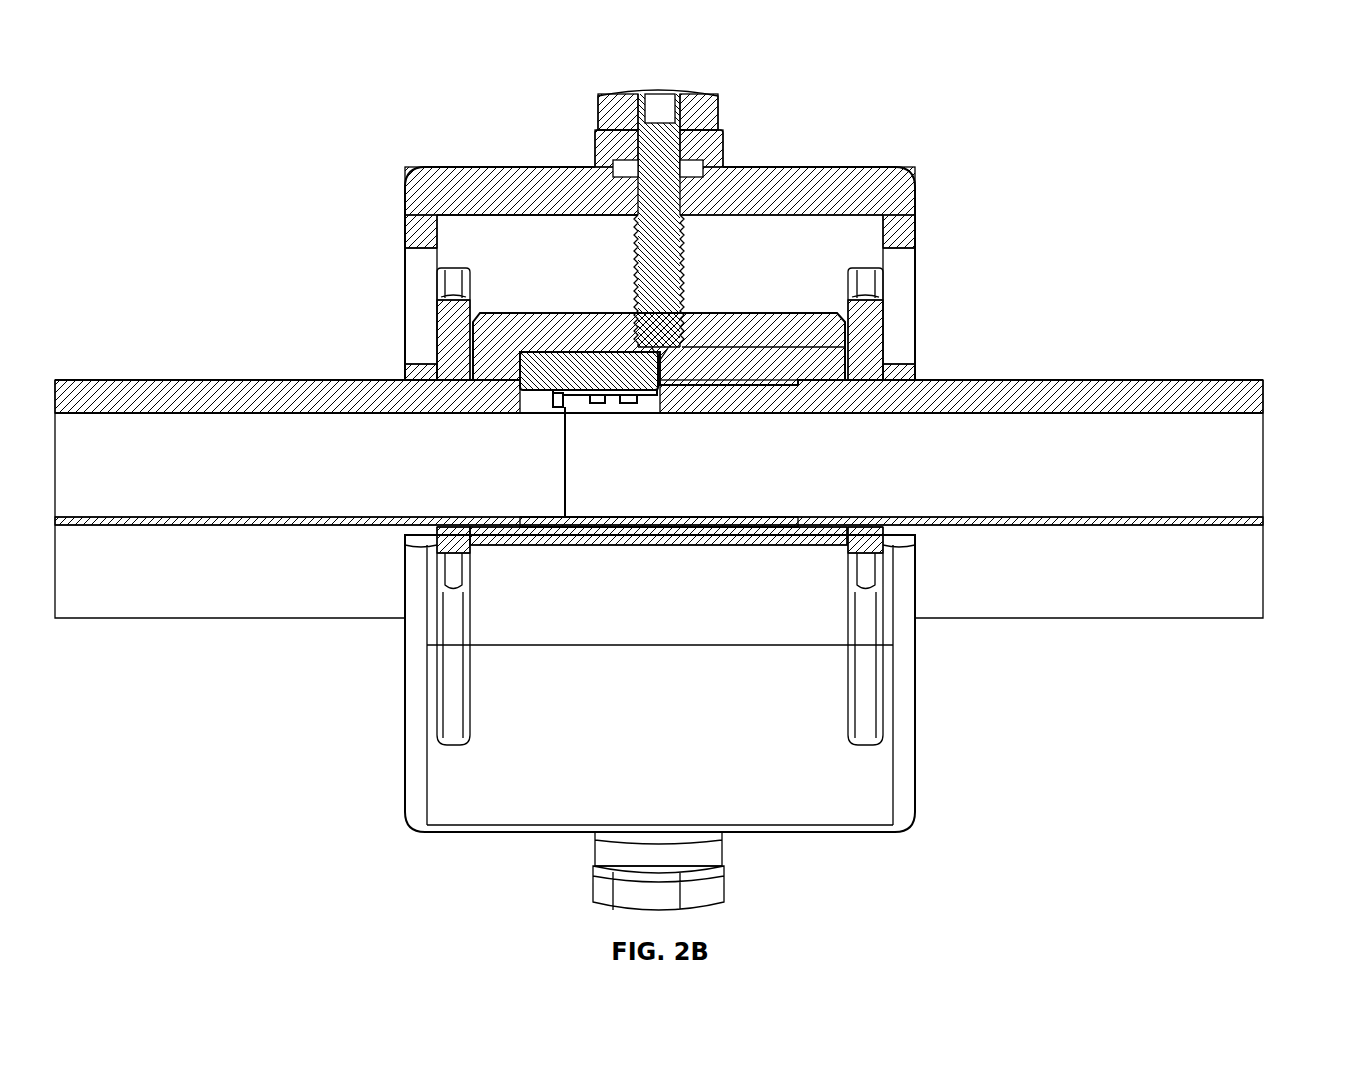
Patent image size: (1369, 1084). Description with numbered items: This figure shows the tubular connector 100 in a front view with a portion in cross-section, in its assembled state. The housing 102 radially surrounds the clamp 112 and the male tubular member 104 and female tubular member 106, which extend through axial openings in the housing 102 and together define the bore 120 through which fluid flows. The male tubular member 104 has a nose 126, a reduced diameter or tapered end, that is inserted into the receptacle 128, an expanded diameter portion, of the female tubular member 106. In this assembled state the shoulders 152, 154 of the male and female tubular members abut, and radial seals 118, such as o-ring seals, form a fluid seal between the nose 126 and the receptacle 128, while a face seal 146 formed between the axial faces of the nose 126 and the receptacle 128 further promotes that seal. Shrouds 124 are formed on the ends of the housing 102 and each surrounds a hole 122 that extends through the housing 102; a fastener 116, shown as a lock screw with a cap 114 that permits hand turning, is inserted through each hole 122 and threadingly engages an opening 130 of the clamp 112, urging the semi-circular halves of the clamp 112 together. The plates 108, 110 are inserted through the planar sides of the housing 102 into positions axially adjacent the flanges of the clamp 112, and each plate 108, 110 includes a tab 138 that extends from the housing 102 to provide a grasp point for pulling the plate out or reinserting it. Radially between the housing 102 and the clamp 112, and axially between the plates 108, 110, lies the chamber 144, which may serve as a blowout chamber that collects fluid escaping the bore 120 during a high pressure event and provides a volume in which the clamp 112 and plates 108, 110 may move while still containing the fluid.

The tubular connector 100 is at (1092, 82).
The housing 102 is at (782, 163).
The male tubular member 104 is at (1152, 378).
The female tubular member 106 is at (136, 378).
The plate 108 is at (872, 308).
The plate 110 is at (448, 330).
The clamp 112 is at (800, 307).
The cap 114 is at (684, 94).
The fastener 116 is at (637, 272).
The radial seals 118 is at (597, 408).
The bore 120 is at (1245, 457).
The hole 122 is at (640, 158).
The shroud 124 is at (722, 160).
The nose 126 is at (620, 410).
The receptacle 128 is at (580, 350).
The opening 130 is at (715, 316).
The tab 138 is at (450, 583).
The chamber 144 is at (545, 230).
The face seal 146 is at (552, 397).
The shoulder 152 is at (760, 350).
The shoulder 154 is at (553, 366).